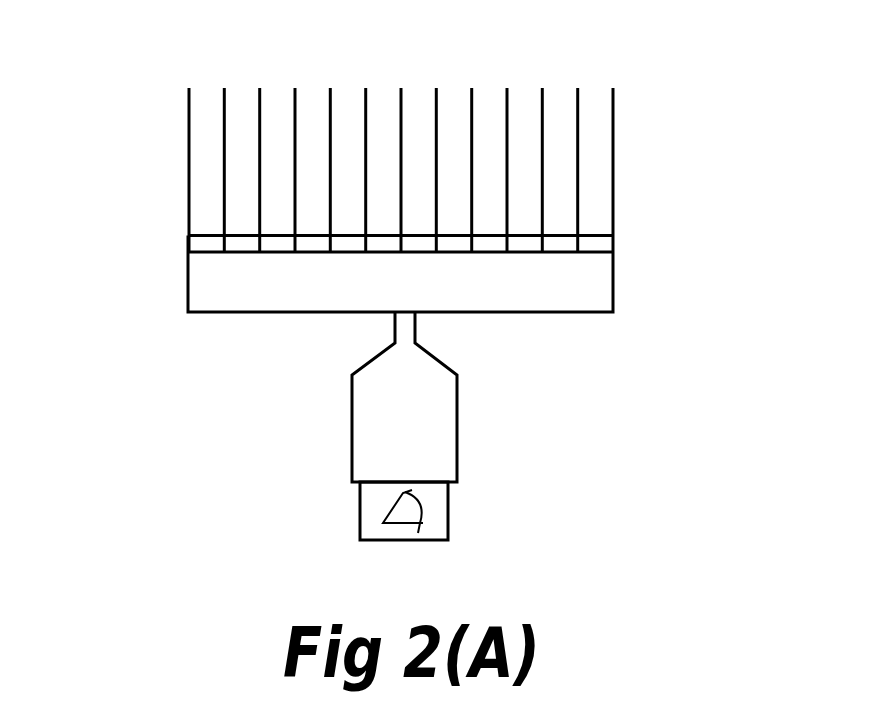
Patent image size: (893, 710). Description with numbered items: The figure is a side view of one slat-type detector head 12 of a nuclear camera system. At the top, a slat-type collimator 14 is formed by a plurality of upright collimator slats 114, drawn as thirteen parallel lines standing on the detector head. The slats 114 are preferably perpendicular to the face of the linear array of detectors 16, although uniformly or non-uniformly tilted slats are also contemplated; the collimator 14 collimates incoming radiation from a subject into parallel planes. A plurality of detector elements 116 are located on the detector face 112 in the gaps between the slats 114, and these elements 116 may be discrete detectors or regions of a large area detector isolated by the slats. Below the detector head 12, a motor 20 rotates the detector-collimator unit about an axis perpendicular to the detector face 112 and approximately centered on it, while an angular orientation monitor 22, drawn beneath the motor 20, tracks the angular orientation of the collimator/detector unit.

The slat-type collimator 14 is at (380, 128).
The collimator slats 114 is at (440, 120).
The detector face 112 is at (188, 255).
The detector elements 116 is at (597, 233).
The linear array of detectors 16 is at (614, 253).
The slat-type detector head 12 is at (603, 280).
The motor 20 is at (447, 421).
The angular orientation monitor 22 is at (447, 515).